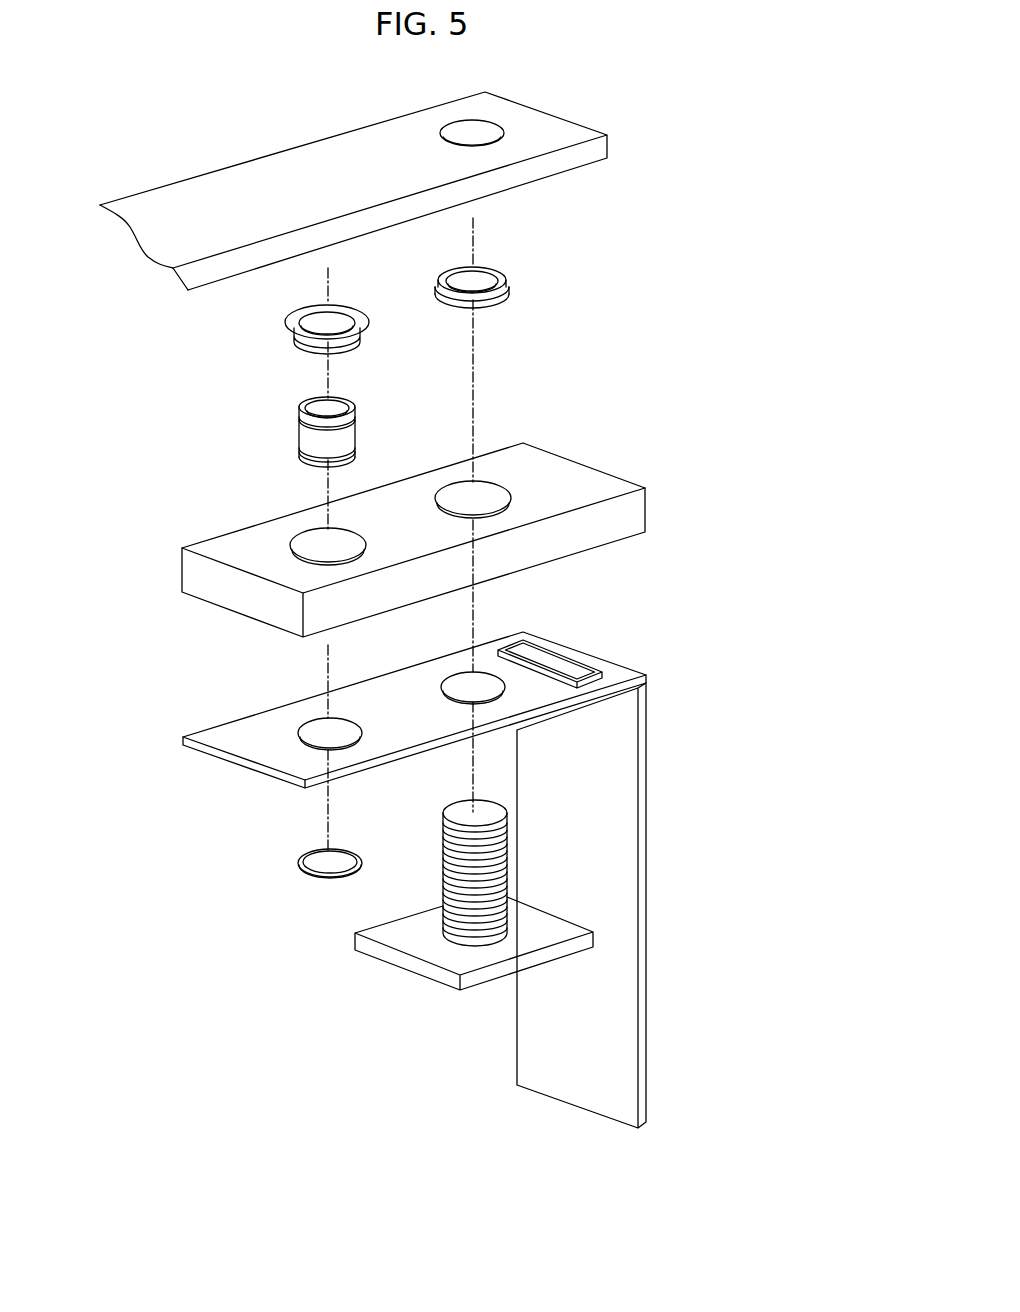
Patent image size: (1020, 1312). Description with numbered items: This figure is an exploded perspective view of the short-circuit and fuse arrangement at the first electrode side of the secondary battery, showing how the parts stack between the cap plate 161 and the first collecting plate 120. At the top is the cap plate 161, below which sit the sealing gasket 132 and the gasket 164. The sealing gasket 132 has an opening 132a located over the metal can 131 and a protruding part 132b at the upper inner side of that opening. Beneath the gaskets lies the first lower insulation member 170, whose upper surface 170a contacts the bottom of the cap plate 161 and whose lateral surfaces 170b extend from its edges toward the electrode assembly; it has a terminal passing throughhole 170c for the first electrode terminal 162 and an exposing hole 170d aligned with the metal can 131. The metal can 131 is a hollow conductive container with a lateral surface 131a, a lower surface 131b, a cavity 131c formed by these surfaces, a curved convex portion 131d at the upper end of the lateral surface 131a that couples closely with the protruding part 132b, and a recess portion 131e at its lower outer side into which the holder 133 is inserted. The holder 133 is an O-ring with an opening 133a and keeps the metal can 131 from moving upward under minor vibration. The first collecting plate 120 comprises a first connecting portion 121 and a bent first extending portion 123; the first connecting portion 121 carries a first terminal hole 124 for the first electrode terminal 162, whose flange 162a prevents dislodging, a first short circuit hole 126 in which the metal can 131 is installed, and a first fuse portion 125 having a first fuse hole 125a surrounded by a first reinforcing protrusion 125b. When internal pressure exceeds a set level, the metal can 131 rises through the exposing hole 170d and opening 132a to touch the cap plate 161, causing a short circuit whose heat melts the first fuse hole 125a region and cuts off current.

The first collecting plate 120 is at (399, 863).
The first connecting portion 121 is at (374, 716).
The first extending portion 123 is at (582, 1075).
The first terminal hole 124 is at (460, 683).
The first fuse portion 125 is at (568, 623).
The first fuse hole 125a is at (568, 665).
The first reinforcing protrusion 125b is at (533, 642).
The first short circuit hole 126 is at (320, 742).
The metal can 131 is at (304, 423).
The lateral surface 131a is at (308, 433).
The lower surface 131b is at (313, 467).
The cavity 131c is at (317, 410).
The convex portion 131d is at (298, 408).
The recess portion 131e is at (310, 458).
The sealing gasket 132 is at (295, 310).
The opening 132a is at (318, 330).
The protruding part 132b is at (342, 313).
The holder 133 is at (290, 858).
The opening 133a is at (318, 860).
The cap plate 161 is at (357, 145).
The first electrode terminal 162 is at (447, 905).
The flange 162a is at (428, 950).
The gasket 164 is at (497, 268).
The first lower insulation member 170 is at (457, 518).
The upper surface 170a is at (600, 483).
The lateral surfaces 170b is at (630, 513).
The terminal passing throughhole 170c is at (488, 505).
The exposing hole 170d is at (305, 558).